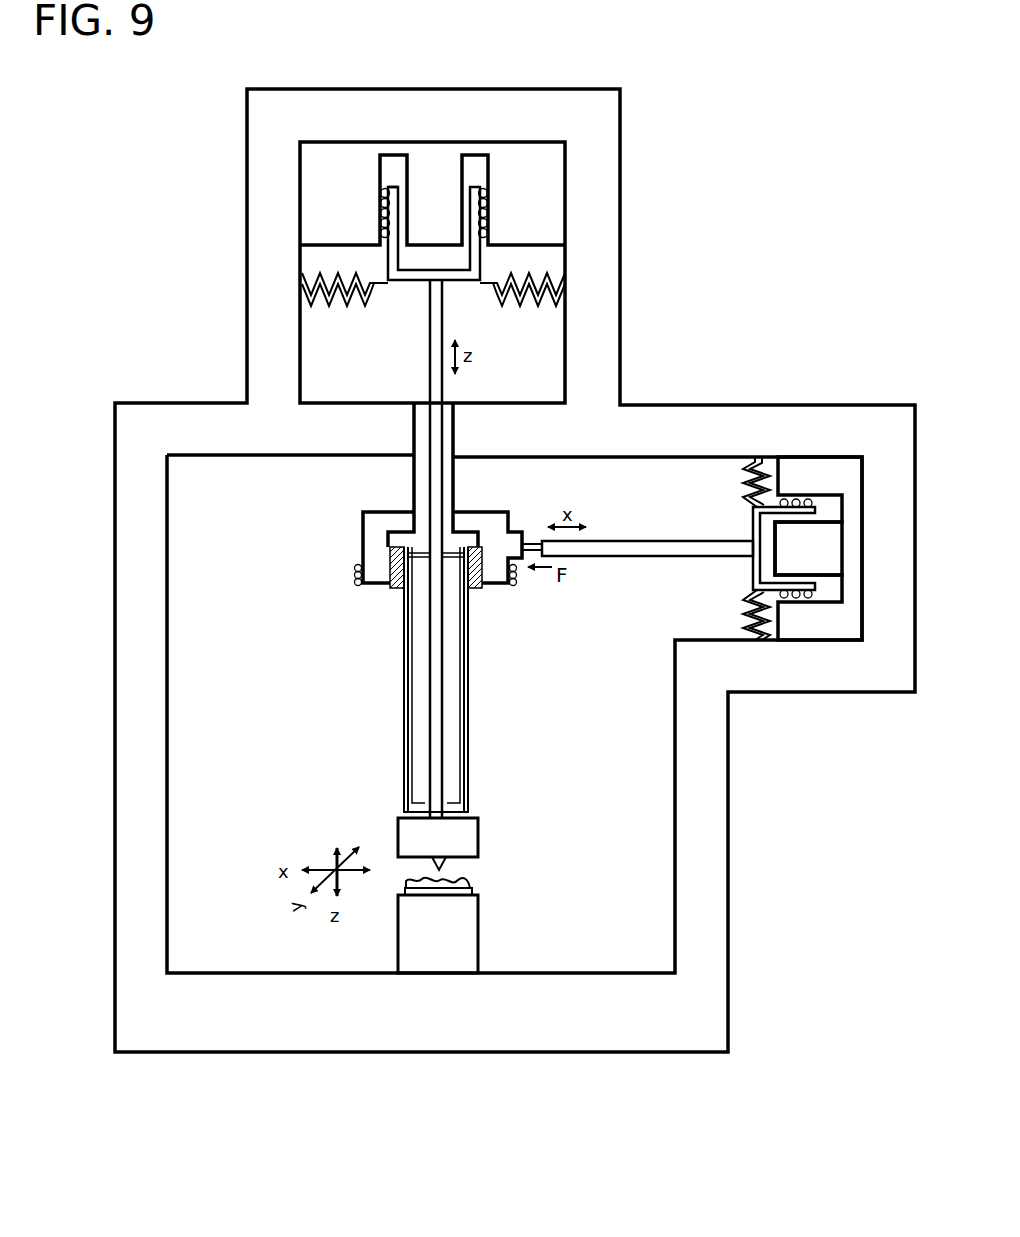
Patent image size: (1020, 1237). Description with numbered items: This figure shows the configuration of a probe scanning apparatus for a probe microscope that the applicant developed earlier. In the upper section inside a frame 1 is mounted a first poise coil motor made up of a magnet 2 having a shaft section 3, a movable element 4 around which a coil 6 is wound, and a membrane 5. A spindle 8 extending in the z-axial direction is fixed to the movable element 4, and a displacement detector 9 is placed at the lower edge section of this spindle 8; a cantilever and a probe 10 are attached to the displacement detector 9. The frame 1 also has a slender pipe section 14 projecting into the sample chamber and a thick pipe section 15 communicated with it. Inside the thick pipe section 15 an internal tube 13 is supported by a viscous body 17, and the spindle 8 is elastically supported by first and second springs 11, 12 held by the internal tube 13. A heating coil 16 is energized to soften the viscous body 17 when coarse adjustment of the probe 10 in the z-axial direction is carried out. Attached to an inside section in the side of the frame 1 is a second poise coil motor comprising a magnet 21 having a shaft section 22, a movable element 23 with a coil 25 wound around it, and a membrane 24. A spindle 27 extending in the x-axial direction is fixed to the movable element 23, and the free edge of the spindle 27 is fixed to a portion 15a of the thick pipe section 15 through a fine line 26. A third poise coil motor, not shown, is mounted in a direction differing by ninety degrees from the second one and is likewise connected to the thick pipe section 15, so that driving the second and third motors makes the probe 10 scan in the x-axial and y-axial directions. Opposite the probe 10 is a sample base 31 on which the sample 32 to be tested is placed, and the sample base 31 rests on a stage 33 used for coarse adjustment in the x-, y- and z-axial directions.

The frame 1 is at (600, 133).
The magnet 2 is at (565, 210).
The shaft section 3 is at (434, 205).
The movable element 4 is at (386, 190).
The membrane 5 is at (545, 305).
The coil 6 is at (381, 204).
The spindle 8 is at (437, 378).
The displacement detector 9 is at (480, 835).
The probe 10 is at (447, 862).
The first spring 11 is at (478, 590).
The second spring 12 is at (458, 802).
The internal tube 13 is at (470, 710).
The slender pipe section 14 is at (414, 480).
The thick pipe section 15 is at (365, 520).
The portion of the thick pipe section 15a is at (515, 540).
The heating coil 16 is at (353, 570).
The viscous body 17 is at (394, 590).
The magnet 21 is at (813, 472).
The shaft section 22 is at (797, 548).
The movable element 23 is at (753, 528).
The membrane 24 is at (740, 470).
The coil 25 is at (800, 598).
The fine line 26 is at (533, 540).
The spindle 27 is at (630, 540).
The sample base 31 is at (478, 895).
The sample 32 is at (472, 880).
The stage 33 is at (420, 940).